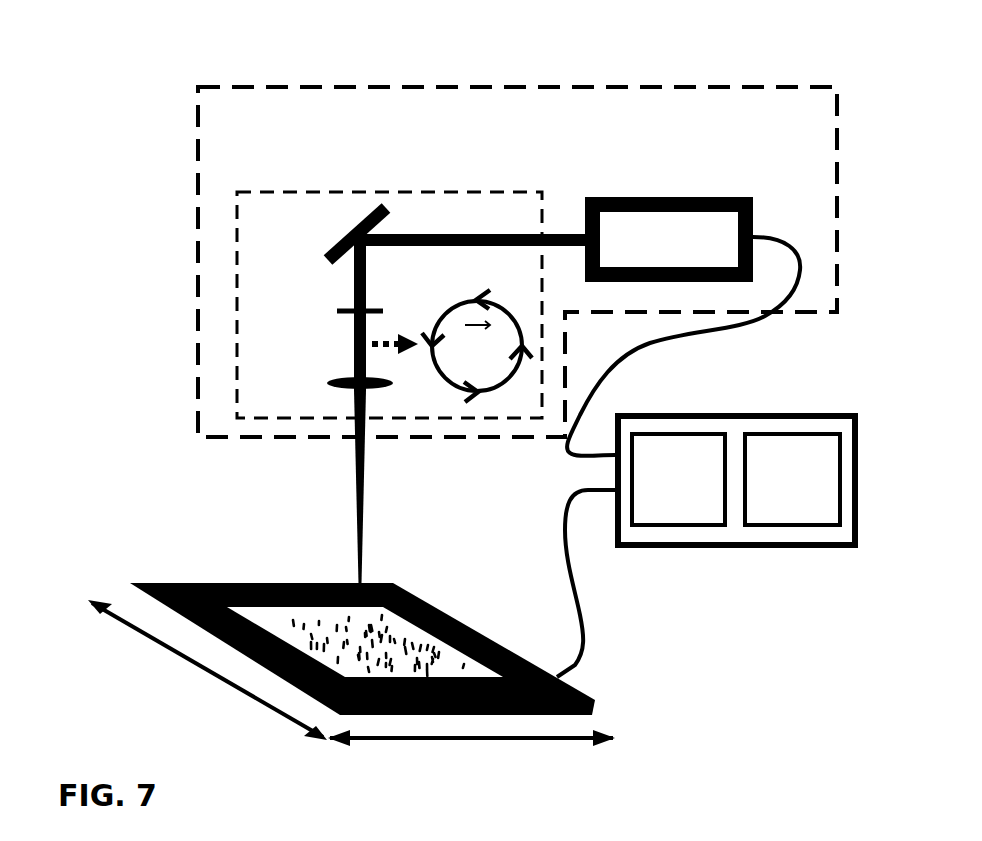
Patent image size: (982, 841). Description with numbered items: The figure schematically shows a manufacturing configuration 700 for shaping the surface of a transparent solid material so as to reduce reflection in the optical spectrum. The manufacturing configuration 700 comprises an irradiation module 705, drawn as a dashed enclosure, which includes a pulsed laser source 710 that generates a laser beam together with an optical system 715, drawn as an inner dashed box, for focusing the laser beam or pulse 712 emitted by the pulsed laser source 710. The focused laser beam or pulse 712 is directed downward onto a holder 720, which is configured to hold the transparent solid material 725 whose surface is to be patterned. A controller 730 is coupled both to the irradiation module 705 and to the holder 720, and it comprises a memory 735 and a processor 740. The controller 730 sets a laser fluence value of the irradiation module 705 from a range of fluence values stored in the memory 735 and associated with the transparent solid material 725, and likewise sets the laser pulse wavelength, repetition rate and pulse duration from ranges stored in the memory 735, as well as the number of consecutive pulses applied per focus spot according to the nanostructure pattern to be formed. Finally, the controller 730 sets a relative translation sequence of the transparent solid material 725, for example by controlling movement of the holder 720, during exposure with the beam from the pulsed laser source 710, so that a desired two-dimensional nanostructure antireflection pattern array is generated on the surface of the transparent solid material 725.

The manufacturing configuration 700 is at (104, 142).
The irradiation module 705 is at (483, 87).
The pulsed laser source 710 is at (732, 196).
The laser beam or pulse 712 is at (363, 526).
The optical system 715 is at (275, 190).
The holder 720 is at (437, 607).
The transparent solid material 725 is at (313, 603).
The controller 730 is at (758, 413).
The memory 735 is at (705, 517).
The processor 740 is at (823, 517).